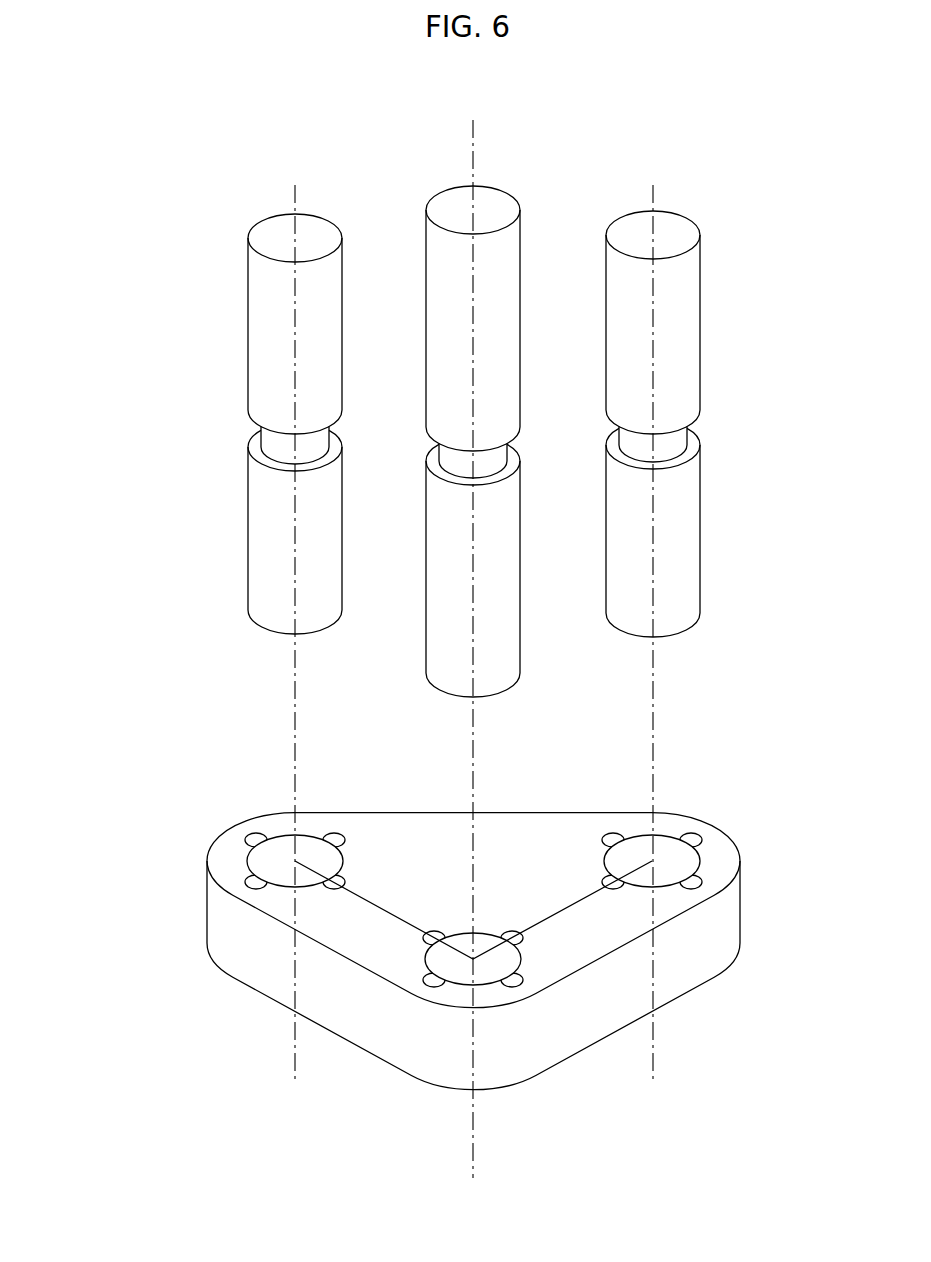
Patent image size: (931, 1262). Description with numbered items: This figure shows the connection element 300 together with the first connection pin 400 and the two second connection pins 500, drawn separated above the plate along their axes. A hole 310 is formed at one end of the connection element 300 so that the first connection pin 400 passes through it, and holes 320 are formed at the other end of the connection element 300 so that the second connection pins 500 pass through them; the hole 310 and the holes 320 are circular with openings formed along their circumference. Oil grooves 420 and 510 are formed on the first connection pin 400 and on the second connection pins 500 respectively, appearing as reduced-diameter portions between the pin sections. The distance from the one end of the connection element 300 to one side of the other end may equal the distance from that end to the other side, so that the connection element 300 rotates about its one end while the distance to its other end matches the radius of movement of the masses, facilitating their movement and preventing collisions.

The connection element 300 is at (383, 1028).
The hole 310 is at (483, 973).
The holes 320 is at (268, 858).
The first connection pin 400 is at (493, 208).
The oil groove 420 is at (490, 462).
The second connection pins 500 is at (270, 318).
The oil grooves 510 is at (277, 439).